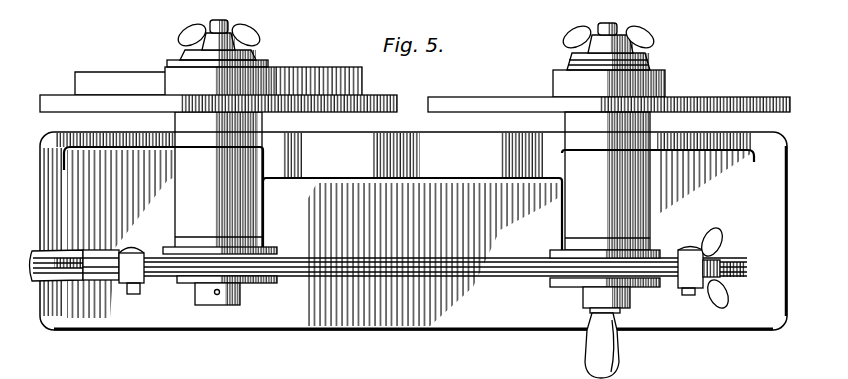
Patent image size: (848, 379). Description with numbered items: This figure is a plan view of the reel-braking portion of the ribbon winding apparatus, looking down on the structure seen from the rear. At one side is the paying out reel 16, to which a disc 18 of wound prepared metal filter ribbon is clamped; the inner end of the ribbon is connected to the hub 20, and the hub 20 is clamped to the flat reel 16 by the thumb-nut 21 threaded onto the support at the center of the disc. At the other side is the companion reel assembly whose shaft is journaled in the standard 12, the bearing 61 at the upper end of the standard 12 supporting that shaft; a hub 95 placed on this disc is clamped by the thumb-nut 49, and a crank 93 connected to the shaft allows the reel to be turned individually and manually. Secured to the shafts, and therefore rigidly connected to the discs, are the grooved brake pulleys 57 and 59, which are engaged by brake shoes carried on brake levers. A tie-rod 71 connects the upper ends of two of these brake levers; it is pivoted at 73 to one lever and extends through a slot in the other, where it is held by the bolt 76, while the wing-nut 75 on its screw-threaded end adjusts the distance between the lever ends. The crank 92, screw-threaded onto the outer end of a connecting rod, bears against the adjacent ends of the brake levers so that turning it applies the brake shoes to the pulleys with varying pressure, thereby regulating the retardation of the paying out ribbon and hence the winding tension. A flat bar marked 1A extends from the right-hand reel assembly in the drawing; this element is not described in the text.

The standard 12 is at (406, 126).
The paying out reel 16 is at (42, 97).
The disc of prepared metal filter ribbon 18 is at (117, 78).
The hub 20 is at (268, 67).
The thumb-nut 21 is at (248, 33).
The thumb-nut 49 is at (654, 35).
The hub 95 is at (663, 83).
The right plate 1A is at (728, 100).
The bearing 61 is at (607, 181).
The tie-rod 71 is at (500, 273).
The crank 92 is at (52, 281).
The pivot 73 is at (137, 295).
The brake pulley 59 is at (262, 285).
The brake pulley 57 is at (568, 285).
The crank 93 is at (623, 356).
The bolt 76 is at (682, 249).
The wing-nut 75 is at (732, 300).